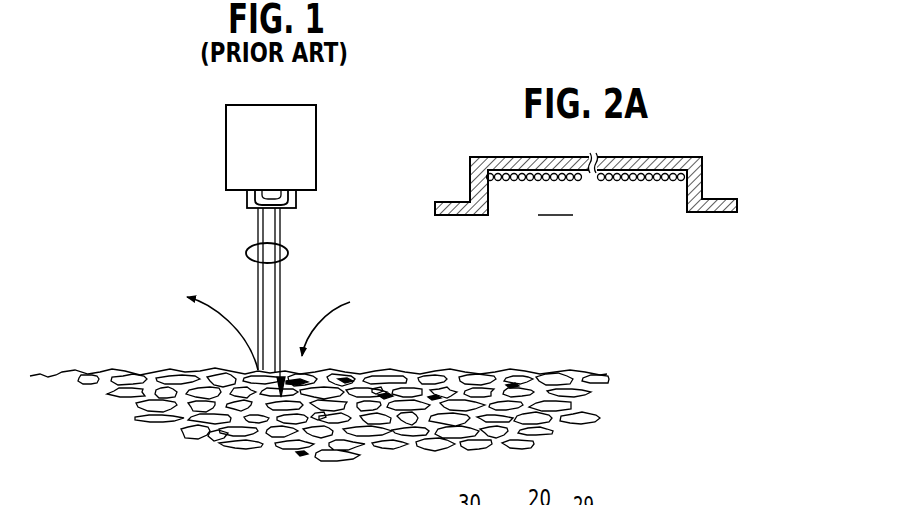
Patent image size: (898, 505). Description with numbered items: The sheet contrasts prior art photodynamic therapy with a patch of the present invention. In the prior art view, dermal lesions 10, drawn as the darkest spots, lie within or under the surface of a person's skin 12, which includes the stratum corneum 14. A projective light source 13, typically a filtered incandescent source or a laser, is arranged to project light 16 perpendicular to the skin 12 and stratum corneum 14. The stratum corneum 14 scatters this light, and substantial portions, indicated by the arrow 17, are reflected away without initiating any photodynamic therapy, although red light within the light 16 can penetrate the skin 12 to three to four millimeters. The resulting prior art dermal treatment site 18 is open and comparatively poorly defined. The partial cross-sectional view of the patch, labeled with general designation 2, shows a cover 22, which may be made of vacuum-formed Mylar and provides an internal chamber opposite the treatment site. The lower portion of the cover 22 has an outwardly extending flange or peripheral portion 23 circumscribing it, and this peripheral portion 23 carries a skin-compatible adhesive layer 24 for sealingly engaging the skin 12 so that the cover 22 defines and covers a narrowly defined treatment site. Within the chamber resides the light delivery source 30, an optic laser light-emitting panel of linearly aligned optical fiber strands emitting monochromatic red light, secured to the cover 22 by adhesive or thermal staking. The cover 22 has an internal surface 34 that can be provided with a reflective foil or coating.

In FIG. 2A, the nozzle plate assembly 2 is at (582, 172).
In FIG. 1, the dermal lesions 10 is at (215, 432).
In FIG. 1, the skin 12 is at (598, 405).
In FIG. 1, the projective light source 13 is at (226, 181).
In FIG. 1, the stratum corneum 14 is at (477, 373).
In FIG. 1, the light 16 is at (289, 253).
In FIG. 1, the reflected light 17 is at (219, 316).
In FIG. 1, the dermal treatment site 18 is at (338, 322).
In FIG. 2A, the cover 22 is at (698, 160).
In FIG. 2A, the flange or peripheral portion 23 is at (442, 198).
In FIG. 2A, the adhesive layer 24 is at (455, 218).
In FIG. 2A, the light delivery source 30 is at (635, 187).
In FIG. 2A, the internal surface 34 is at (470, 197).